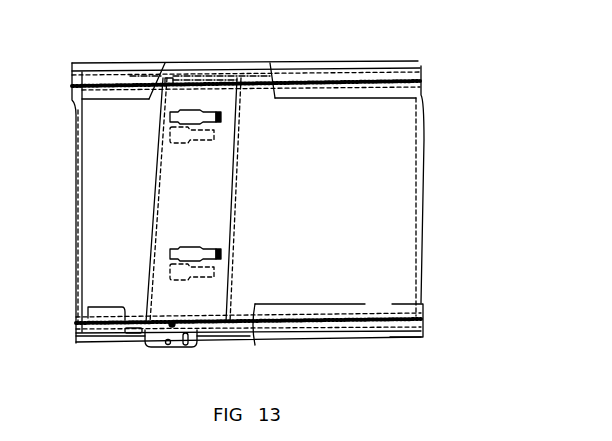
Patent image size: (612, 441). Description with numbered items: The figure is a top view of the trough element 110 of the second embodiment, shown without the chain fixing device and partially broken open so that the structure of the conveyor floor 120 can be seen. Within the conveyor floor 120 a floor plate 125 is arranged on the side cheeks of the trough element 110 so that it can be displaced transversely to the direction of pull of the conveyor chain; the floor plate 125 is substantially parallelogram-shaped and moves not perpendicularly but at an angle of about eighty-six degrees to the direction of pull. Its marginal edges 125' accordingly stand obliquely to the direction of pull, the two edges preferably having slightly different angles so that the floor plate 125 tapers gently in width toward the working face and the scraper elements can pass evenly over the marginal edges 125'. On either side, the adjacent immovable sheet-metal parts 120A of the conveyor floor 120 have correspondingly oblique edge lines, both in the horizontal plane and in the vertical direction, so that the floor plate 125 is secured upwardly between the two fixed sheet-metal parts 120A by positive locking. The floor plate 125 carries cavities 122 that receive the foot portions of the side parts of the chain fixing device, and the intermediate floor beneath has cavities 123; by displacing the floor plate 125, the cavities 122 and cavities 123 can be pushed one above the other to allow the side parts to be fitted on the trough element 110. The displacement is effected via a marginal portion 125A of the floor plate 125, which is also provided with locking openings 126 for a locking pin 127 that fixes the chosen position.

The trough element 110 is at (378, 40).
The conveyor floor 120 is at (437, 113).
The sheet-metal parts 120A is at (117, 112).
The cavities 122 is at (216, 118).
The cavities 123 is at (183, 140).
The floor plate 125 is at (218, 200).
The marginal edges 125' is at (256, 200).
The marginal portion 125A is at (179, 346).
The locking openings 126 is at (166, 345).
The locking pin 127 is at (173, 324).